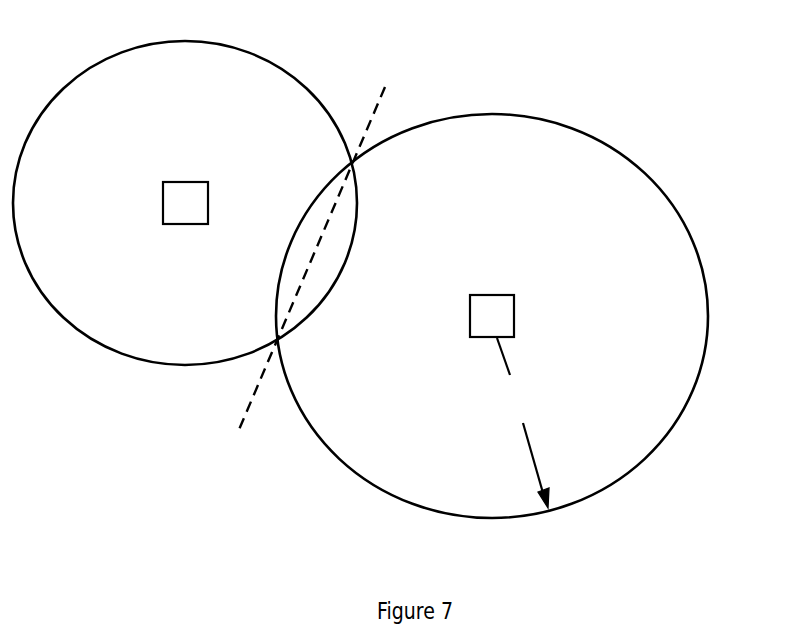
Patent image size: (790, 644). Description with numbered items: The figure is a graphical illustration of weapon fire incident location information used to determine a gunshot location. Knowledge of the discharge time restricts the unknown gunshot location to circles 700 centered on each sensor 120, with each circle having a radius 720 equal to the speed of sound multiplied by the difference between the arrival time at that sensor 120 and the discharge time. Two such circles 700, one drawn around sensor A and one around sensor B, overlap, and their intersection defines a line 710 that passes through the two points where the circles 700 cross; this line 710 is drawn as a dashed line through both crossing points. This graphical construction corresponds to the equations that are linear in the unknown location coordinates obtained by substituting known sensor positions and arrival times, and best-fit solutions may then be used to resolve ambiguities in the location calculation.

The circles 700 is at (390, 273).
The line 710 is at (334, 235).
The sensor 120 is at (335, 237).
The radius 720 is at (513, 423).